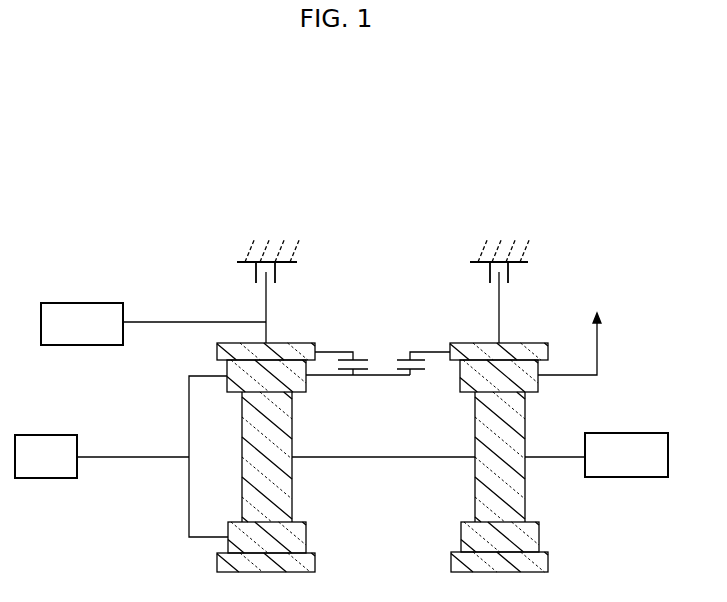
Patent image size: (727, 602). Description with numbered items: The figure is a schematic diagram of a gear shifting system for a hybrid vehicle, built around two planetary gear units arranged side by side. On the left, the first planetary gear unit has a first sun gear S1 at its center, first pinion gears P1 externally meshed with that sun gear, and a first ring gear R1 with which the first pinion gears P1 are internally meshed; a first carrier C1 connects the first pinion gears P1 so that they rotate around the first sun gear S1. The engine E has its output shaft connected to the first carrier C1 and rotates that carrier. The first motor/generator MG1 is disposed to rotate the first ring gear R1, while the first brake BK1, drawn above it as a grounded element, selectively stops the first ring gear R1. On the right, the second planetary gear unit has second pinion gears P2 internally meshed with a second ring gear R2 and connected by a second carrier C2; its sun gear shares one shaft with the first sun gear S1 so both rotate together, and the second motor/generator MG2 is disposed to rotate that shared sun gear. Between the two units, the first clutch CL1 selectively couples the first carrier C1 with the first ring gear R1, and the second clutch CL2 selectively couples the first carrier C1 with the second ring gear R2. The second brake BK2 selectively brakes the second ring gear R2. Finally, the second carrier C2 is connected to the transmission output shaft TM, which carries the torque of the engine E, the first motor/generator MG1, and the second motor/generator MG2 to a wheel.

The first brake BK1 is at (247, 289).
The second brake BK2 is at (476, 289).
The first motor/generator MG1 is at (153, 324).
The second motor/generator MG2 is at (596, 455).
The engine E is at (102, 456).
The first carrier C1 is at (207, 376).
The second carrier C2 is at (566, 375).
The first clutch CL1 is at (358, 350).
The second clutch CL2 is at (423, 350).
The first ring gear R1 is at (291, 343).
The second ring gear R2 is at (482, 348).
The first pinion gears P1 is at (307, 388).
The second pinion gears P2 is at (460, 385).
The first sun gear S1 is at (292, 478).
The transmission output shaft TM is at (598, 288).